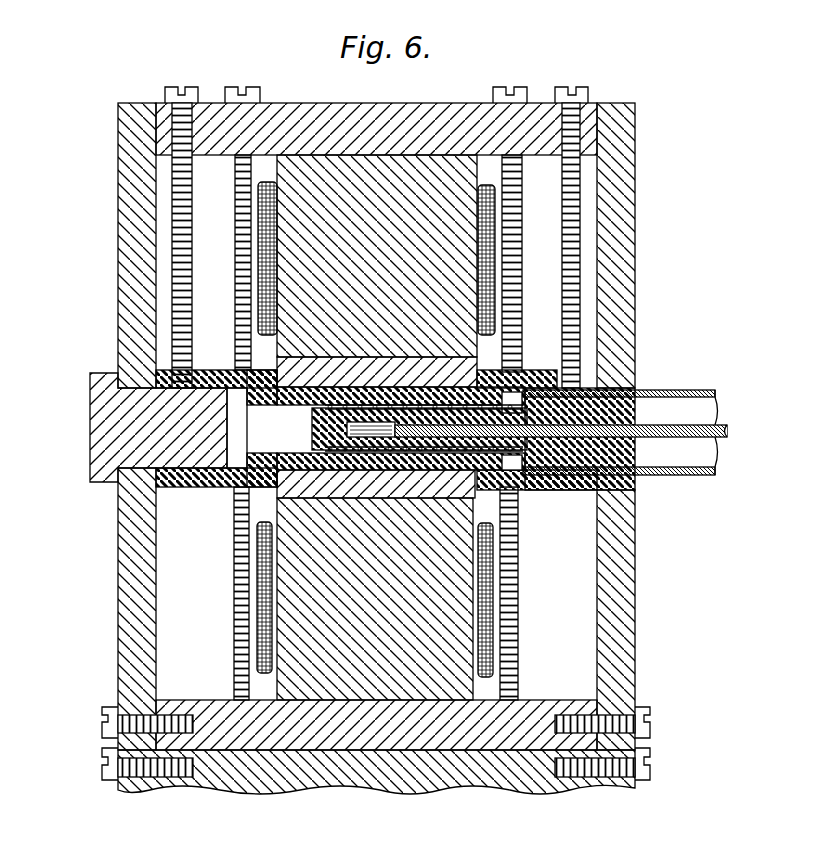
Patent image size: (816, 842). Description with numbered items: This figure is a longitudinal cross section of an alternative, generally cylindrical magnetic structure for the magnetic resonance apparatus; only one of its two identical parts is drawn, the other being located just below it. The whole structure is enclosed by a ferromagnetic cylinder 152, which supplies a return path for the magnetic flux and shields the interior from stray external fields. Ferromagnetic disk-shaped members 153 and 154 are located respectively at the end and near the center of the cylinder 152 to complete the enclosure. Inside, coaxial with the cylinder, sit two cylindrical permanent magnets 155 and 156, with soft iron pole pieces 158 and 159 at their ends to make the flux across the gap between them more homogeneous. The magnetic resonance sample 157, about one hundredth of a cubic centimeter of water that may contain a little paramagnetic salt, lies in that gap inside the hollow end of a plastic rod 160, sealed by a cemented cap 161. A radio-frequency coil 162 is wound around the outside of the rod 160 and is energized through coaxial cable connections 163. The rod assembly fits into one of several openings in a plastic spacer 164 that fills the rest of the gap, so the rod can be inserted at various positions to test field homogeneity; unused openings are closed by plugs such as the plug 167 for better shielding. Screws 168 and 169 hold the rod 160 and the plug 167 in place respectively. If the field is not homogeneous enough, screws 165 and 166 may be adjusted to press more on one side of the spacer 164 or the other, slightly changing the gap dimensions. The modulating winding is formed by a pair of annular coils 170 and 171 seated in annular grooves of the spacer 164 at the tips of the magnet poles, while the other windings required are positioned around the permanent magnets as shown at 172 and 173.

The cylinder 152 is at (620, 578).
The disk-shaped member 153 is at (465, 103).
The disk-shaped member 154 is at (432, 745).
The cylindrical permanent magnet 155 is at (290, 340).
The cylindrical permanent magnet 156 is at (295, 677).
The magnetic resonance sample 157 is at (312, 427).
The soft iron pole piece 158 is at (483, 365).
The soft iron pole piece 159 is at (455, 495).
The plastic rod 160 is at (622, 450).
The cap 161 is at (330, 438).
The radio-frequency coil 162 is at (330, 405).
The coaxial cable connections 163 is at (712, 462).
The plastic spacer 164 is at (208, 370).
The screw 165 is at (235, 205).
The screw 166 is at (522, 185).
The plug 167 is at (95, 425).
The screw 168 is at (522, 300).
The screw 169 is at (192, 270).
The annular coil 170 is at (270, 405).
The annular coil 171 is at (280, 460).
The winding 172 is at (264, 182).
The winding 173 is at (266, 522).